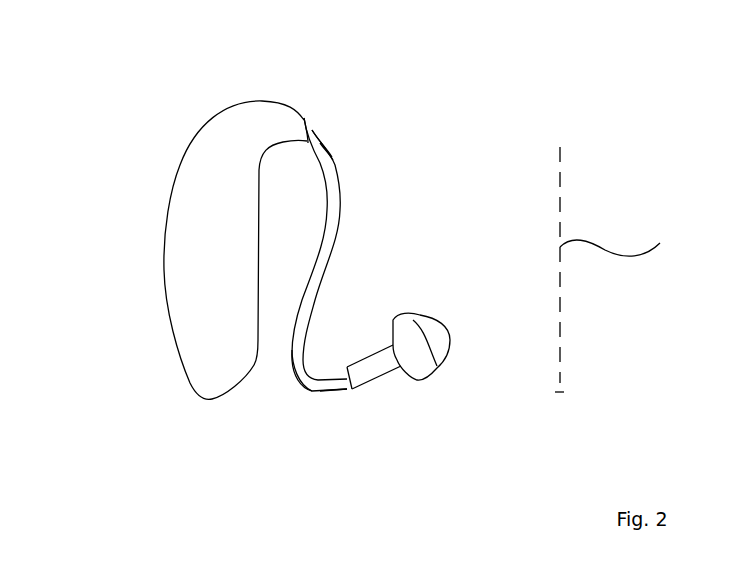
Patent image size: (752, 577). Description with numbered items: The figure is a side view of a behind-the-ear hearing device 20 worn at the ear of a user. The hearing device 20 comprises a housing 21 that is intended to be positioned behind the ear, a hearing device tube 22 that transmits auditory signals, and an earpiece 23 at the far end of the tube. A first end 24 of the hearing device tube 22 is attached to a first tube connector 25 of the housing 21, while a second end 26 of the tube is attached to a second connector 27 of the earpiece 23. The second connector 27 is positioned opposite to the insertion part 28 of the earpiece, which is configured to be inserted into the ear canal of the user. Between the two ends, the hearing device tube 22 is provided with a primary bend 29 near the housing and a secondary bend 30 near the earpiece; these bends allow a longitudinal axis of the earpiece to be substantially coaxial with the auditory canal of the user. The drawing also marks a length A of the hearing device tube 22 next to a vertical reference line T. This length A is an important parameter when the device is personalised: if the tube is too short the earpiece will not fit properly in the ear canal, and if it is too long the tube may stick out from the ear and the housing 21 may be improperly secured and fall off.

The BTE hearing device 20 is at (352, 65).
The housing 21 is at (193, 222).
The hearing device tube 22 is at (334, 238).
The earpiece 23 is at (458, 292).
The first end 24 is at (323, 137).
The first tube connector 25 is at (306, 122).
The second end 26 is at (335, 390).
The second connector 27 is at (357, 378).
The insertion part 28 is at (443, 337).
The primary bend 29 is at (328, 139).
The secondary bend 30 is at (292, 380).
The axis T is at (559, 257).
The length A is at (622, 244).